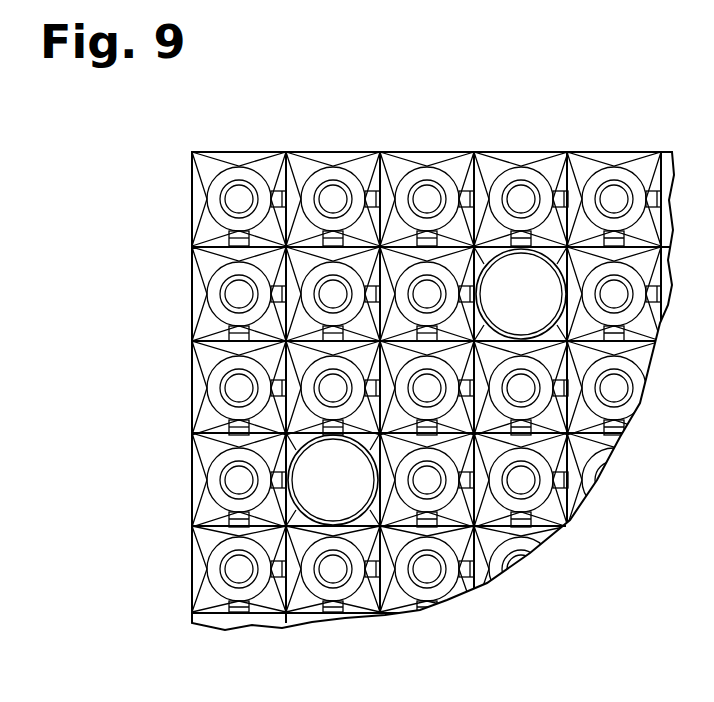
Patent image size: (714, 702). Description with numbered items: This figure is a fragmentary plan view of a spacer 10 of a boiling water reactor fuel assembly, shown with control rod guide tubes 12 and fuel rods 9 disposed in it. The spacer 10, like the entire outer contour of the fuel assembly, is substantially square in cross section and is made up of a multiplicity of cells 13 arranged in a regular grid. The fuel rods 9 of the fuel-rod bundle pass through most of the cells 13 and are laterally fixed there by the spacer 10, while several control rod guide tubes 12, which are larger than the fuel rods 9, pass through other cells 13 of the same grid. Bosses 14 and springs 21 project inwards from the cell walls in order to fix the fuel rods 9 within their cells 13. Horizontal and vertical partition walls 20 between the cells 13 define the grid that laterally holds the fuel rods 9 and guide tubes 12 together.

The fuel rod 9 is at (220, 218).
The spacer 10 is at (587, 158).
The control rod guide tube 12 is at (292, 440).
The cell 13 is at (463, 162).
The boss 14 is at (365, 163).
The horizontal partition 20 is at (282, 512).
The spring 21 is at (343, 162).